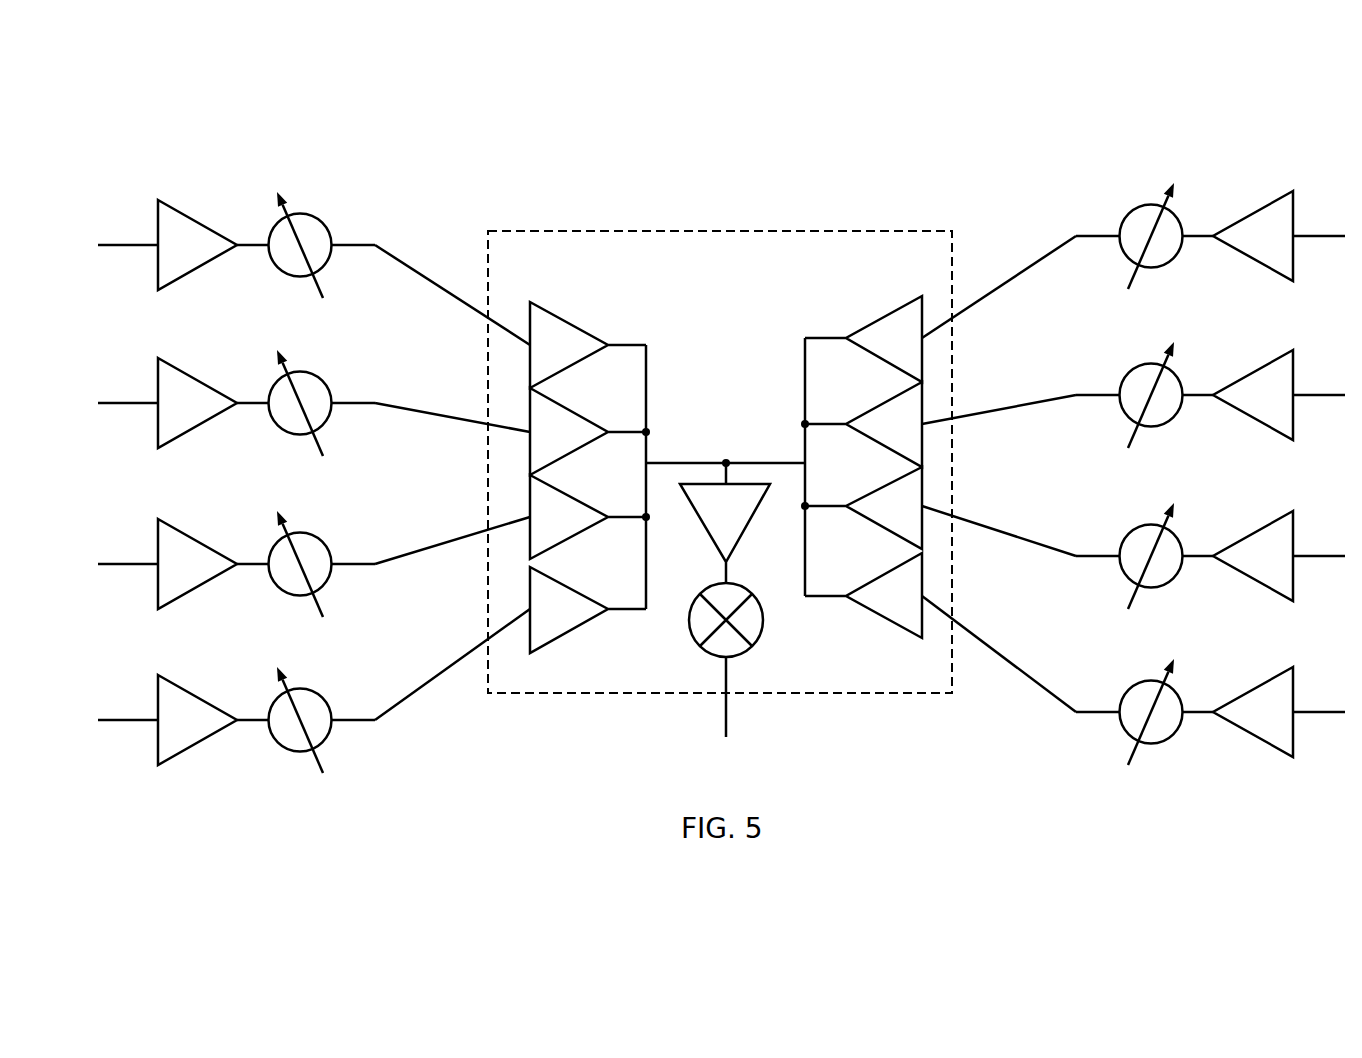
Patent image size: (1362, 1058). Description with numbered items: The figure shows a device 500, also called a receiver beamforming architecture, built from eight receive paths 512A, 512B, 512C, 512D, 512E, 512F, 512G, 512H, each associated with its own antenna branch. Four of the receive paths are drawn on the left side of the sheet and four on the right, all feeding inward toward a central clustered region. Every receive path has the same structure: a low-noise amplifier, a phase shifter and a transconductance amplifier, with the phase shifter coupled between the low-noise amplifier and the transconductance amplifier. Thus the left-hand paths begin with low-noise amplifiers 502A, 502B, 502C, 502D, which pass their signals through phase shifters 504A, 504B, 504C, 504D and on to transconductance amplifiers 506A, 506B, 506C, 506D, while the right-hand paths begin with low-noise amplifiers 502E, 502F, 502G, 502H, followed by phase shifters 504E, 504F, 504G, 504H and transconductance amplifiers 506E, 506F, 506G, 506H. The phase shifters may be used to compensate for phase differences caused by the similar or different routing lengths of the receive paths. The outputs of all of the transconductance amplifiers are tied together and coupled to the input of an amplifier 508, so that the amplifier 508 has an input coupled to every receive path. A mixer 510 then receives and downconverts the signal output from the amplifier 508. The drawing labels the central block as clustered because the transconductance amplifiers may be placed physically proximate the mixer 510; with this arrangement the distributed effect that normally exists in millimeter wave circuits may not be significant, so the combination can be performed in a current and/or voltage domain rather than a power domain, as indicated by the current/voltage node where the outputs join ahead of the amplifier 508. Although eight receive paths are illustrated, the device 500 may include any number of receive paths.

The device 500 is at (720, 379).
The low-noise amplifier 502A is at (170, 206).
The low-noise amplifier 502B is at (170, 364).
The low-noise amplifier 502C is at (170, 525).
The low-noise amplifier 502D is at (170, 681).
The low-noise amplifier 502E is at (1255, 212).
The low-noise amplifier 502F is at (1255, 371).
The low-noise amplifier 502G is at (1255, 532).
The low-noise amplifier 502H is at (1255, 688).
The phase shifter 504A is at (304, 214).
The phase shifter 504B is at (304, 372).
The phase shifter 504C is at (304, 533).
The phase shifter 504D is at (304, 689).
The phase shifter 504E is at (1145, 205).
The phase shifter 504F is at (1145, 364).
The phase shifter 504G is at (1145, 525).
The phase shifter 504H is at (1145, 681).
The transconductance amplifier 506A is at (569, 367).
The transconductance amplifier 506B is at (569, 454).
The transconductance amplifier 506C is at (569, 538).
The transconductance amplifier 506D is at (569, 630).
The transconductance amplifier 506E is at (888, 362).
The transconductance amplifier 506F is at (888, 448).
The transconductance amplifier 506G is at (888, 530).
The transconductance amplifier 506H is at (888, 619).
The amplifier 508 is at (742, 540).
The mixer 510 is at (750, 648).
The receive path 512A is at (452, 263).
The receive path 512B is at (452, 383).
The receive path 512C is at (452, 511).
The receive path 512D is at (452, 660).
The receive path 512E is at (999, 268).
The receive path 512F is at (999, 373).
The receive path 512G is at (999, 506).
The receive path 512H is at (999, 647).